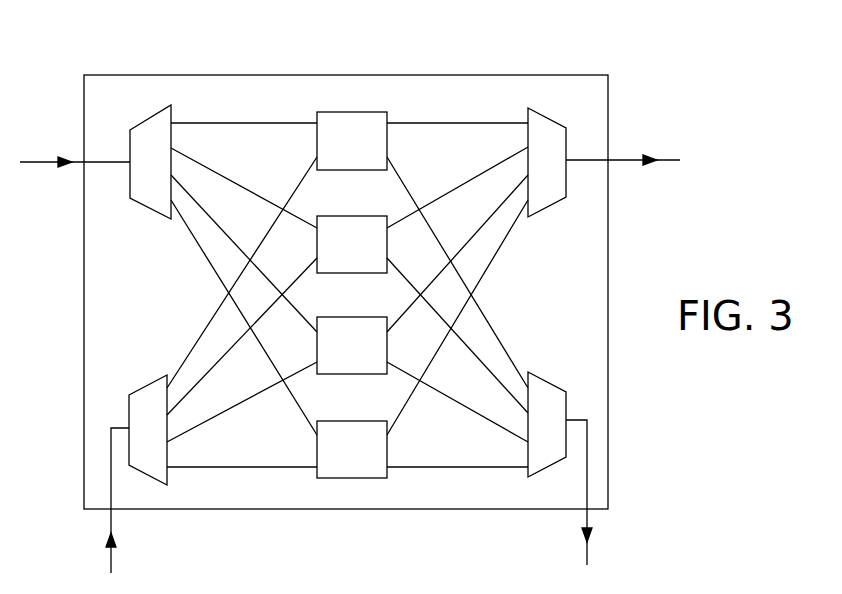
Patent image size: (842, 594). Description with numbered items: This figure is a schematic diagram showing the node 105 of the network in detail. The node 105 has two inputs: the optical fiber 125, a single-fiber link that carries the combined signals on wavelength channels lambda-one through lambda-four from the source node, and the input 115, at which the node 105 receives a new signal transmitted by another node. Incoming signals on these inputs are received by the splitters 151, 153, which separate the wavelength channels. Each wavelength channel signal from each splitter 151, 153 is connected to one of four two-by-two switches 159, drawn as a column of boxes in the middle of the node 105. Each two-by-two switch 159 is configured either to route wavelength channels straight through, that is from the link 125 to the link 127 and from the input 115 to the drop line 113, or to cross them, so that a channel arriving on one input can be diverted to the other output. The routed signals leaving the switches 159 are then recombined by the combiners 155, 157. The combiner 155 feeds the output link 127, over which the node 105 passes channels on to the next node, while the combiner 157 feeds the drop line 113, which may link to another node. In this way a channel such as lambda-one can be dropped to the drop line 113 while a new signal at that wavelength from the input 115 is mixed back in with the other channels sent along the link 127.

The node 105 is at (646, 65).
The drop line 113 is at (587, 553).
The input 115 is at (111, 558).
The optical fiber 125 is at (42, 162).
The link 127 is at (620, 160).
The splitter 151 is at (146, 118).
The splitter 153 is at (196, 478).
The combiner 155 is at (540, 116).
The combiner 157 is at (547, 465).
The 2×2 switch 159 is at (346, 271).